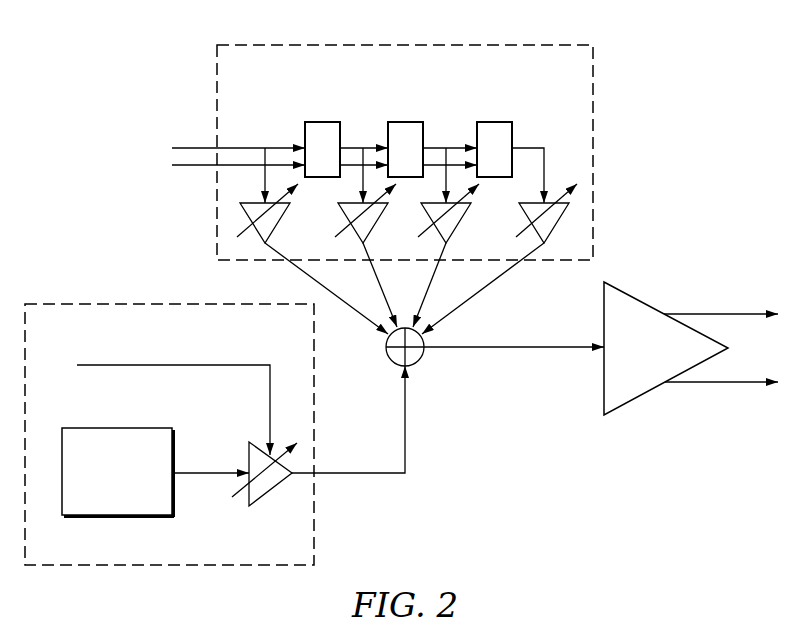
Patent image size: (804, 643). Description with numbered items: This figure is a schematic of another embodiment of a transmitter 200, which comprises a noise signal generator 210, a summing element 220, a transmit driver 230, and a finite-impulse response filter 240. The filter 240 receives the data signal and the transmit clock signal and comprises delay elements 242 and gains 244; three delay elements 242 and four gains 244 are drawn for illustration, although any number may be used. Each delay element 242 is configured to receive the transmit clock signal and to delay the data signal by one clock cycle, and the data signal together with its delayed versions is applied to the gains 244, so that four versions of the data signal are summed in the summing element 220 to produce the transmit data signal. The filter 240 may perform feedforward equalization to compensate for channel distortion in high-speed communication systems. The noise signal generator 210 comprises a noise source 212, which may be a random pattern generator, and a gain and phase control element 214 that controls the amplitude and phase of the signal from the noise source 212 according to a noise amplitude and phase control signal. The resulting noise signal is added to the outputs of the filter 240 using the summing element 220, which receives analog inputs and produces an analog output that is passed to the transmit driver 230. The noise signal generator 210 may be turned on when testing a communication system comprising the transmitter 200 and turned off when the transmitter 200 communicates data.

The transmitter 200 is at (118, 62).
The noise signal generator 210 is at (314, 522).
The noise source 212 is at (120, 516).
The gain and phase control element 214 is at (248, 452).
The summing element 220 is at (418, 362).
The transmit driver 230 is at (640, 298).
The finite-impulse response (FIR) filter 240 is at (593, 148).
The delay element 242 is at (322, 121).
The gain 244 is at (281, 223).